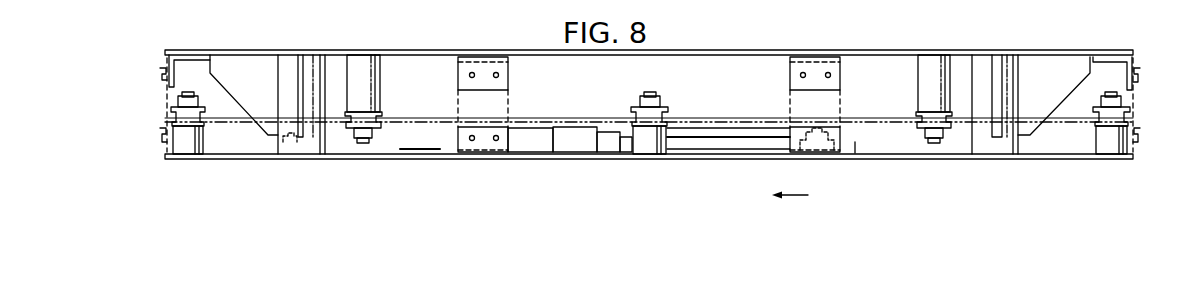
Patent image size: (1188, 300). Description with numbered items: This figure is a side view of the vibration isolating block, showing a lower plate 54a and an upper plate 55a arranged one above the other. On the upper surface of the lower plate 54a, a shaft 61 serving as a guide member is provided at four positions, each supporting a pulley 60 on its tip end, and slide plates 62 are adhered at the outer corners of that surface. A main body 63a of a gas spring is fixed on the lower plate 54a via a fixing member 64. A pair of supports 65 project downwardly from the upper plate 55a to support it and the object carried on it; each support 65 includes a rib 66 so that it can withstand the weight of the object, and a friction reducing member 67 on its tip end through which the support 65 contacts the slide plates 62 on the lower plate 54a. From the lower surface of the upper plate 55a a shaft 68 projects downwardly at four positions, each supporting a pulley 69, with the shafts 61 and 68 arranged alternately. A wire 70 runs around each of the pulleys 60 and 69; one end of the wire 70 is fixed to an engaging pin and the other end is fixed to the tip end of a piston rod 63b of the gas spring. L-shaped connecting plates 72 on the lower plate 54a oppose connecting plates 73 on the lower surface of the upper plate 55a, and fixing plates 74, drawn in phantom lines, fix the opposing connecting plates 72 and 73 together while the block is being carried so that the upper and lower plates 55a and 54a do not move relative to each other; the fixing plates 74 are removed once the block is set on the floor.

The lower plate 54a is at (701, 159).
The upper plate 55a is at (684, 50).
The pulley 60 is at (218, 100).
The shaft 61 is at (205, 140).
The slide plate 62 is at (250, 150).
The main body of gas spring 63a is at (446, 152).
The piston rod 63b is at (734, 152).
The fixing member 64 is at (580, 152).
The support 65 is at (315, 60).
The rib 66 is at (292, 60).
The friction reducing member 67 is at (305, 154).
The shaft 68 is at (365, 62).
The pulley 69 is at (386, 140).
The wire 70 is at (721, 118).
The connecting plate 72 is at (167, 150).
The connecting plate 73 is at (169, 60).
The fixing plate 74 is at (167, 93).